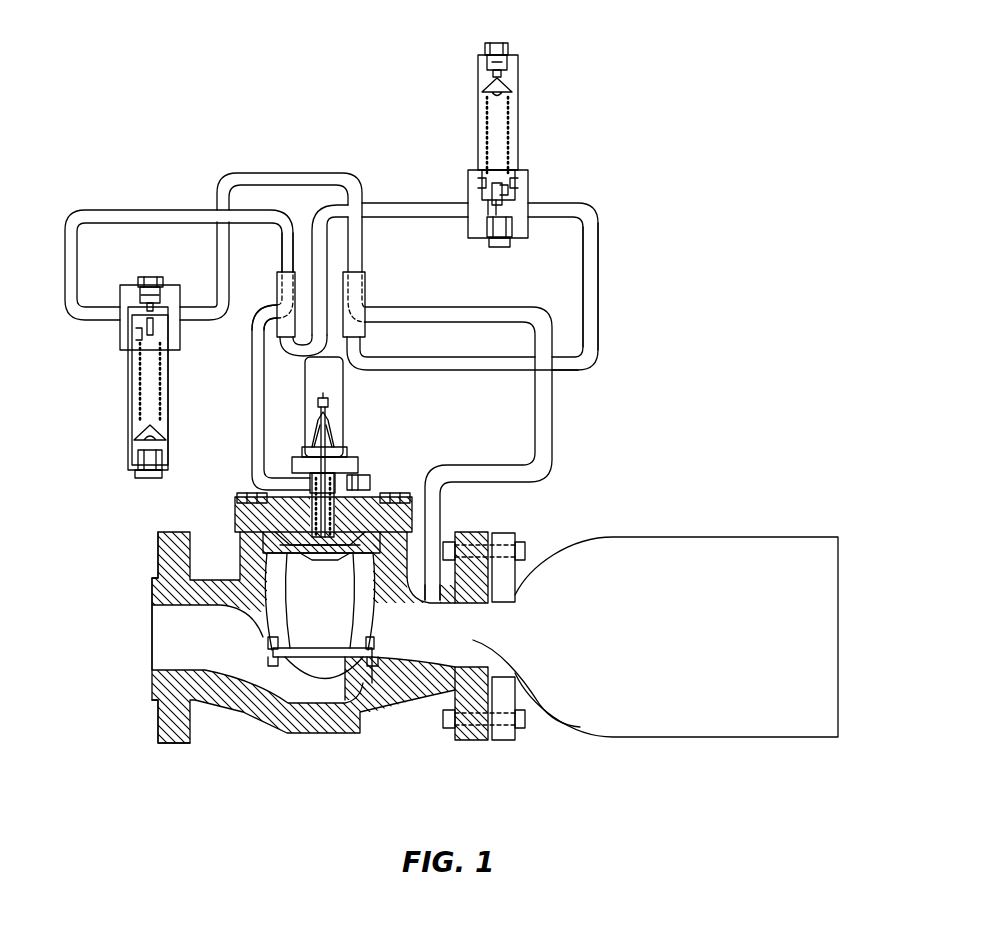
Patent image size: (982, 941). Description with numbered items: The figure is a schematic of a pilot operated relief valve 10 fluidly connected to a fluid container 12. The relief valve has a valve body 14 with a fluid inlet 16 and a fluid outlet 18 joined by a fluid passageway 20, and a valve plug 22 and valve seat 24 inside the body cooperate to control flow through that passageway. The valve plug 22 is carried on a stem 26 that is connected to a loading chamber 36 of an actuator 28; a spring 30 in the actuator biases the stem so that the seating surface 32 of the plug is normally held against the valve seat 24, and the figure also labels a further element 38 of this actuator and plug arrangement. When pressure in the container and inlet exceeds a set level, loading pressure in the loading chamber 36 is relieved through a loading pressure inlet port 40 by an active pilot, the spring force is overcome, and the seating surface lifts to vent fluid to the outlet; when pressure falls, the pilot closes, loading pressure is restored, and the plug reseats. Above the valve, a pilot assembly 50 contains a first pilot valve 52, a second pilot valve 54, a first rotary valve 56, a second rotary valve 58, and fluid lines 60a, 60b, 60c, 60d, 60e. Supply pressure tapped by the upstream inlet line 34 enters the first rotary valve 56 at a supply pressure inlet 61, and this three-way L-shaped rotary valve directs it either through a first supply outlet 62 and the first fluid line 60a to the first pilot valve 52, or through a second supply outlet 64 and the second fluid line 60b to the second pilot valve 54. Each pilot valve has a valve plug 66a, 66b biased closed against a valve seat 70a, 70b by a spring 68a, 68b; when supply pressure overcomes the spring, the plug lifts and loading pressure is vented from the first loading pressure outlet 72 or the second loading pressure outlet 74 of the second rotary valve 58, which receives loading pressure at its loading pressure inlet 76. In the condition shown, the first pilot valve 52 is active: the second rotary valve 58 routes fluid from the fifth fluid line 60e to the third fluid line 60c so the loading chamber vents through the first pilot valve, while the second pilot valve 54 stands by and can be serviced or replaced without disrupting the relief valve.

The pilot operated relief valve 10 is at (214, 786).
The fluid container 12 is at (731, 527).
The valve body 14 is at (245, 701).
The fluid inlet 16 is at (557, 721).
The fluid outlet 18 is at (165, 637).
The fluid passageway 20 is at (355, 685).
The valve plug 22 is at (340, 630).
The valve seat 24 is at (268, 643).
The stem 26 is at (400, 523).
The actuator 28 is at (368, 427).
The spring 30 is at (290, 495).
The seating surface 32 is at (373, 650).
The upstream inlet line 34 is at (552, 413).
The loading chamber 36 is at (297, 535).
The seal 38 is at (287, 547).
The loading pressure inlet port 40 is at (302, 483).
The pilot assembly 50 is at (185, 105).
The first pilot valve 52 is at (574, 62).
The second pilot valve 54 is at (100, 401).
The first rotary valve 56 is at (397, 272).
The second rotary valve 58 is at (269, 272).
The first fluid line 60a is at (600, 285).
The second fluid line 60b is at (296, 172).
The third fluid line 60c is at (387, 203).
The fluid line 60d is at (148, 209).
The fifth fluid line 60e is at (250, 422).
The supply pressure inlet 61 is at (368, 312).
The first supply outlet 62 is at (365, 340).
The second supply outlet 64 is at (363, 273).
The valve plug 66a is at (507, 187).
The valve plug 66b is at (138, 338).
The spring 68a is at (488, 130).
The spring 68b is at (160, 392).
The valve seat 70a is at (488, 205).
The valve seat 70b is at (162, 327).
The first loading pressure outlet 72 is at (287, 342).
The second loading pressure outlet 74 is at (294, 242).
The loading pressure inlet 76 is at (250, 315).